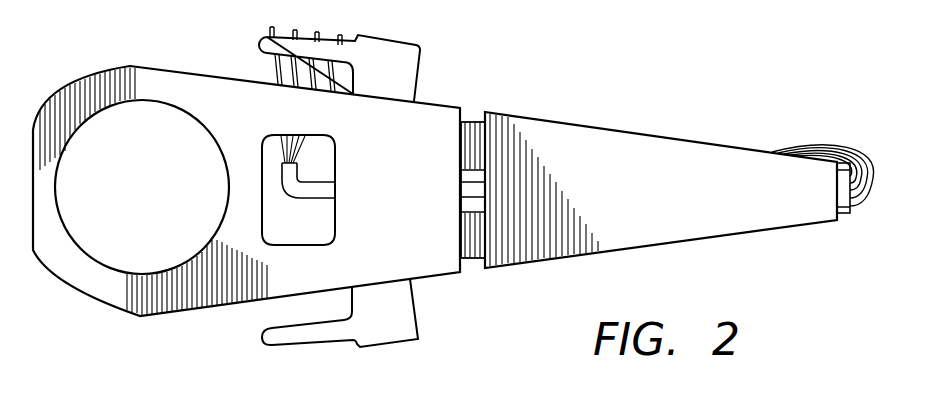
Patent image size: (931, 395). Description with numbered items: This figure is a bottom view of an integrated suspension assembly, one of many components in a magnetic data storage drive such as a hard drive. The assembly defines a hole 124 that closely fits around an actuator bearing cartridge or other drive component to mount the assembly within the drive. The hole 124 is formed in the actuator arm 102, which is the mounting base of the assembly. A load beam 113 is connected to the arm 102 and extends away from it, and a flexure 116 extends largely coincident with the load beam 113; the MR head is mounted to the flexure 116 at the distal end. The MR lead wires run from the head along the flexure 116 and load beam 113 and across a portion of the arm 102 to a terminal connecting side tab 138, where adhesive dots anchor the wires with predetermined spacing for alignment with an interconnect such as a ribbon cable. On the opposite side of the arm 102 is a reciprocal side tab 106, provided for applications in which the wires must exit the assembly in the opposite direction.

The actuator arm 102 is at (87, 75).
The hole 124 is at (55, 190).
The terminal connecting side tab 138 is at (397, 38).
The reciprocal side tab 106 is at (305, 343).
The load beam 113 is at (727, 237).
The flexure 116 is at (842, 210).